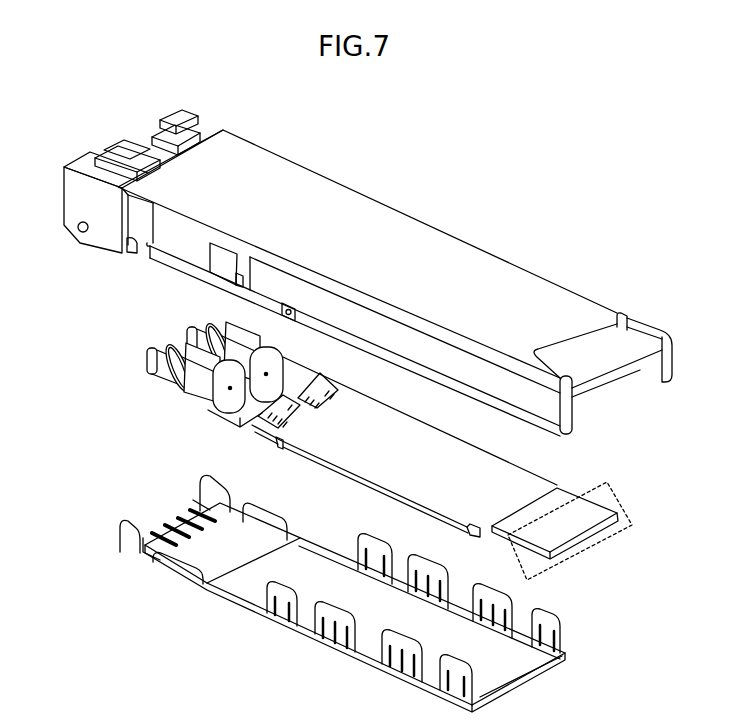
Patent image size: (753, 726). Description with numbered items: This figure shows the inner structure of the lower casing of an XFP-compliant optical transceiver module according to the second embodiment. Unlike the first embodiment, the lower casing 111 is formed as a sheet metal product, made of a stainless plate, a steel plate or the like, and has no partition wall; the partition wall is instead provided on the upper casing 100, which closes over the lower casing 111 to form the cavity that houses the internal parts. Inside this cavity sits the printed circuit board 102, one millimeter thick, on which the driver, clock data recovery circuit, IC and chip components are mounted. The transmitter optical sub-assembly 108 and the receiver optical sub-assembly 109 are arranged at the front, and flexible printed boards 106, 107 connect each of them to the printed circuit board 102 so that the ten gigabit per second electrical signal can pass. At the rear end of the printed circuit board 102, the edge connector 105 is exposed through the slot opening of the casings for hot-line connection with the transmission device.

The upper casing 100 is at (293, 168).
The printed circuit board 102 is at (562, 488).
The edge connector 105 is at (598, 545).
The flexible printed board 106 is at (337, 392).
The flexible printed board 107 is at (292, 413).
The transmitter optical sub-assembly (TOSA) 108 is at (248, 340).
The receiver optical sub-assembly (ROSA) 109 is at (205, 403).
The lower casing 111 is at (255, 614).